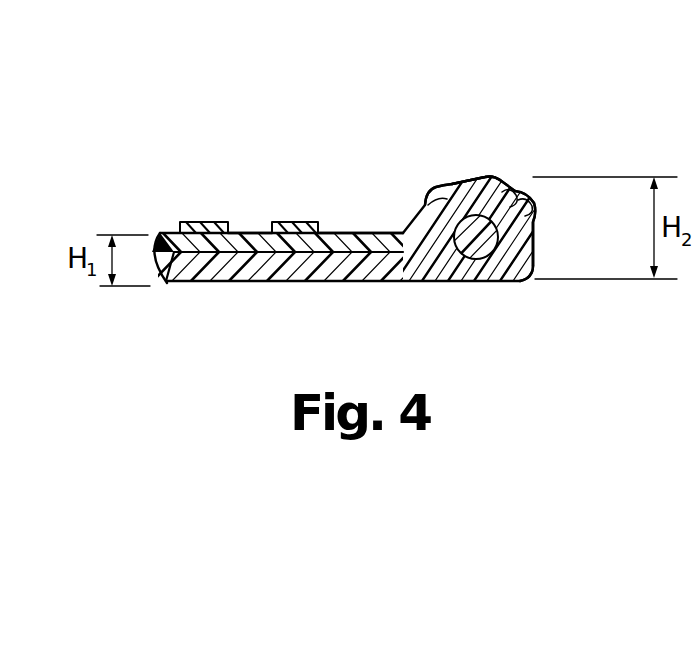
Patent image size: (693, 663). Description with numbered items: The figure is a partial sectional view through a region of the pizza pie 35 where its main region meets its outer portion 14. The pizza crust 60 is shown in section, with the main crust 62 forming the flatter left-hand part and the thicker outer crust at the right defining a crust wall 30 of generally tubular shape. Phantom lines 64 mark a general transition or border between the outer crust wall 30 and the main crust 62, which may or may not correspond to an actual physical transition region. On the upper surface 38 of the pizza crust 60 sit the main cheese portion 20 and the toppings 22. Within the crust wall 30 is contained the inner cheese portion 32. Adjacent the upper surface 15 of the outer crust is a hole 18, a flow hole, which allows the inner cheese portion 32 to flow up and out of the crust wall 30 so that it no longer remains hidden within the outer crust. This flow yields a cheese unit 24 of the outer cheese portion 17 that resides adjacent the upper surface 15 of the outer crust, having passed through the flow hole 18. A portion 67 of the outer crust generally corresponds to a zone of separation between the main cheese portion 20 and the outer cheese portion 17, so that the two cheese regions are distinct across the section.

The outer portion 14 is at (537, 237).
The upper surface 15 is at (534, 228).
The outer cheese portion 17 is at (498, 187).
The hole 18 is at (535, 186).
The main cheese portion 20 is at (257, 232).
The toppings 22 is at (203, 222).
The cheese unit 24 is at (478, 183).
The crust wall 30 is at (520, 283).
The inner cheese portion 32 is at (471, 259).
The pizza pie 35 is at (460, 155).
The upper surface 38 is at (352, 232).
The pizza crust 60 is at (203, 285).
The main crust 62 is at (255, 283).
The phantom lines 64 is at (393, 283).
The portion of outer crust 67 is at (410, 207).